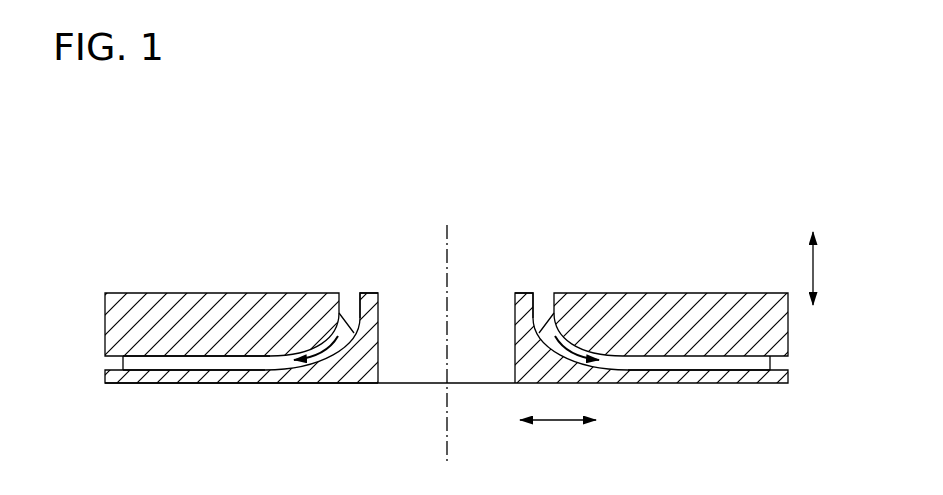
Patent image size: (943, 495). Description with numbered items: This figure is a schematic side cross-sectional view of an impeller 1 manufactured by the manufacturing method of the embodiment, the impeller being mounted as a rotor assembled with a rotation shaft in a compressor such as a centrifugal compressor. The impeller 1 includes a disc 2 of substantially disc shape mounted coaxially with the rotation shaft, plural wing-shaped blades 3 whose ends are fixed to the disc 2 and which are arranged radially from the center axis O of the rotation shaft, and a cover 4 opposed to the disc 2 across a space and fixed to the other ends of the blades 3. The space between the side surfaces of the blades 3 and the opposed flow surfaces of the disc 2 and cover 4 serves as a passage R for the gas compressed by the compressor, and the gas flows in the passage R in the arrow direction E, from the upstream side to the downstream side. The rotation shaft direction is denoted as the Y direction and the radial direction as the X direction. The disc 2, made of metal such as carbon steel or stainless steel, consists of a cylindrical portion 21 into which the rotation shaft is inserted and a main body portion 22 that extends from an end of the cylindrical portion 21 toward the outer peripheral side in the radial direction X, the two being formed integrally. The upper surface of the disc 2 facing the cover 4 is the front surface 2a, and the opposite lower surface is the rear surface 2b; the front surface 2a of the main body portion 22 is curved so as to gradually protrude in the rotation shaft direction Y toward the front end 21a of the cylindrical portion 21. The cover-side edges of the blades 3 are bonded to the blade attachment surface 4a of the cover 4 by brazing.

The impeller 1 is at (744, 194).
The disc 2 is at (535, 291).
The front surface 2a is at (233, 370).
The rear surface 2b is at (323, 385).
The blade 3 is at (273, 360).
The cover 4 is at (290, 292).
The blade attachment surface 4a is at (190, 362).
The cylindrical portion 21 is at (380, 350).
The front end 21a is at (367, 292).
The main body portion 22 is at (185, 380).
The center axis O is at (447, 247).
The arrow direction E is at (320, 340).
The passage R is at (100, 357).
The X direction X is at (558, 438).
The Y direction Y is at (824, 268).